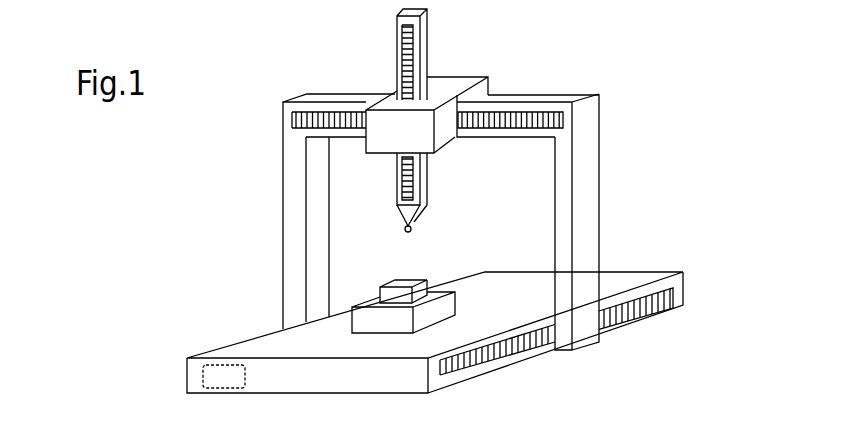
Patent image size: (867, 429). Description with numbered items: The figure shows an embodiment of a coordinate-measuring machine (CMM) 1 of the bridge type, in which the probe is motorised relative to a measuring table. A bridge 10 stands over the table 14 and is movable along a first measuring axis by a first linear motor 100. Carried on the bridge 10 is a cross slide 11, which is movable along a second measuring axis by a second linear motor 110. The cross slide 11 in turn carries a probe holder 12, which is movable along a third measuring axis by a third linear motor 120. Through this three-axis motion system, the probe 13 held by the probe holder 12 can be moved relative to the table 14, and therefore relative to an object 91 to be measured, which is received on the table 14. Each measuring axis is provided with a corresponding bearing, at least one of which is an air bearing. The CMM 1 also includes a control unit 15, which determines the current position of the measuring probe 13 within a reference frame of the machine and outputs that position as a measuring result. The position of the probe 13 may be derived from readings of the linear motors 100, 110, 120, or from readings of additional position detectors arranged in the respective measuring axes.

The coordinate-measuring machine 1 is at (686, 45).
The bridge 10 is at (585, 163).
The first linear motor 100 is at (586, 318).
The second linear motor 110 is at (448, 86).
The third linear motor 120 is at (385, 135).
The cross slide 11 is at (428, 142).
The probe holder 12 is at (395, 53).
The probe 13 is at (405, 213).
The table 14 is at (521, 309).
The control unit 15 is at (221, 365).
The object 91 is at (418, 288).